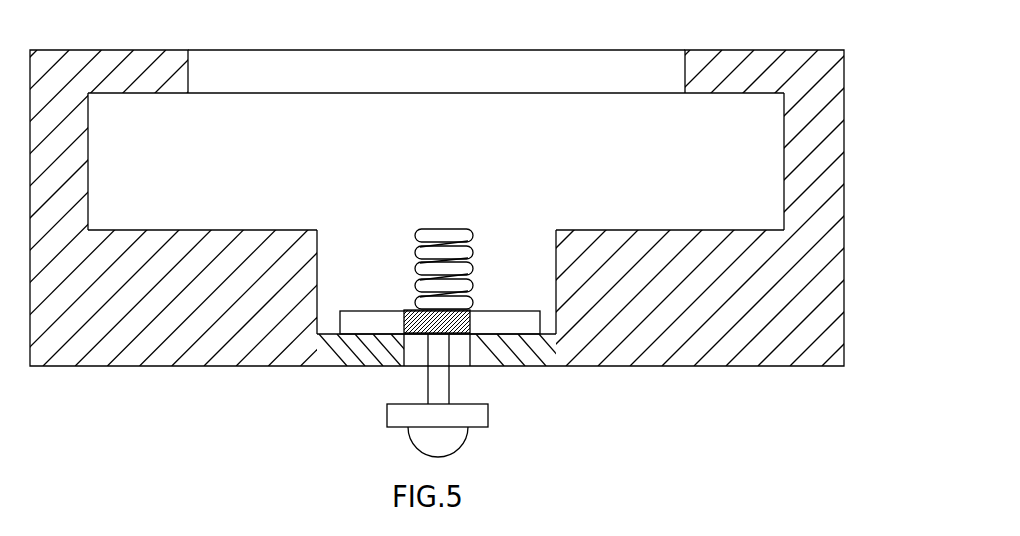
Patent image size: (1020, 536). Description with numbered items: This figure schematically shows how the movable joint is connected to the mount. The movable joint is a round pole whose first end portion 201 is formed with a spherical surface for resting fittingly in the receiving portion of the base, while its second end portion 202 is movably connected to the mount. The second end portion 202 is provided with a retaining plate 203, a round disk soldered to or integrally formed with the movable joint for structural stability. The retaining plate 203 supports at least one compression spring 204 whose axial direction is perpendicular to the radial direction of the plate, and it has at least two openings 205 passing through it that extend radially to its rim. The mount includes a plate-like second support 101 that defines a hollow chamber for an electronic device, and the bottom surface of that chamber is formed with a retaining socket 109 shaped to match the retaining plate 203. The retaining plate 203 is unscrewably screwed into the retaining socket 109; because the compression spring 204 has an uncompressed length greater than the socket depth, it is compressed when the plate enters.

The second support 101 is at (817, 219).
The retaining socket 109 is at (490, 362).
The first end portion 201 is at (428, 400).
The second end portion 202 is at (449, 333).
The retaining plate 203 is at (480, 318).
The compression spring 204 is at (448, 282).
The openings 205 is at (382, 320).